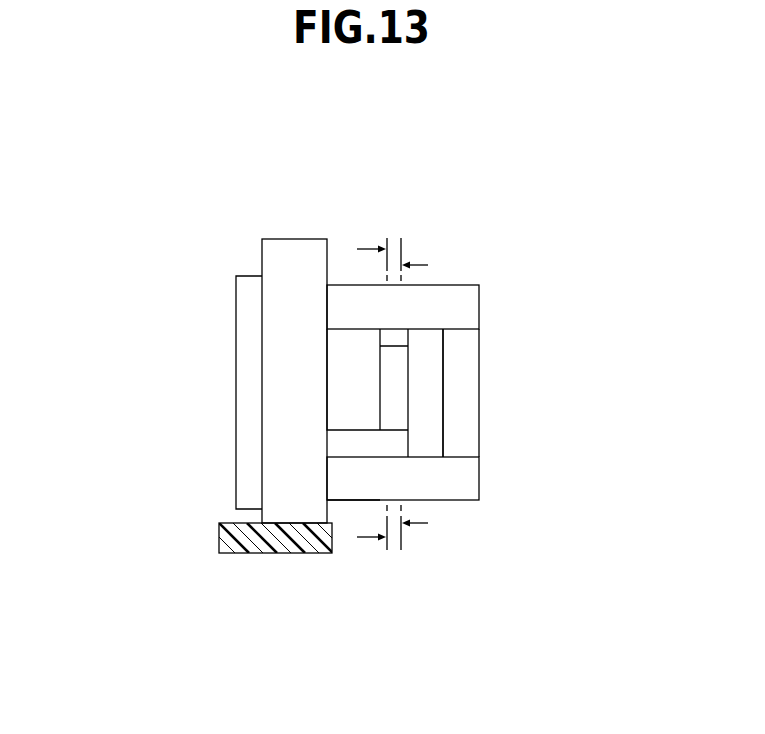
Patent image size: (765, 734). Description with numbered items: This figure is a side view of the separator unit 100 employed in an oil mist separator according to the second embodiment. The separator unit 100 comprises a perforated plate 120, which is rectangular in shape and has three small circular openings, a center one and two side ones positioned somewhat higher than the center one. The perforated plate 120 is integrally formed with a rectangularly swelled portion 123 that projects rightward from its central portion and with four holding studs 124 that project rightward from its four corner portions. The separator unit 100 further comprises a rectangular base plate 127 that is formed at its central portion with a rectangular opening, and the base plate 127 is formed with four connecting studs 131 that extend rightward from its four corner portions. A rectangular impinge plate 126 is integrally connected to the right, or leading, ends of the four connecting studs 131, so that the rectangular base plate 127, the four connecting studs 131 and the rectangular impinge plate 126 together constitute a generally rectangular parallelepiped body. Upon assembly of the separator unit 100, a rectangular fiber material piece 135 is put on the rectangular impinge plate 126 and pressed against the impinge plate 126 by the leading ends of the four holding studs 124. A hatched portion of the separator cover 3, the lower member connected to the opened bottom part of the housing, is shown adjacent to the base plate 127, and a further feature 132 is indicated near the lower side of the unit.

The separator unit 100 is at (244, 148).
The rectangular base plate 127 is at (283, 262).
The perforated plate 120 is at (236, 295).
The separator cover 3 is at (230, 529).
The connecting studs 131 is at (433, 302).
The holding studs 124 is at (396, 448).
The rectangular impinge plate 126 is at (467, 405).
The rectangular fiber material piece 135 is at (428, 368).
The rectangularly swelled portion 123 is at (356, 353).
The gap / contact portion 132 is at (351, 518).